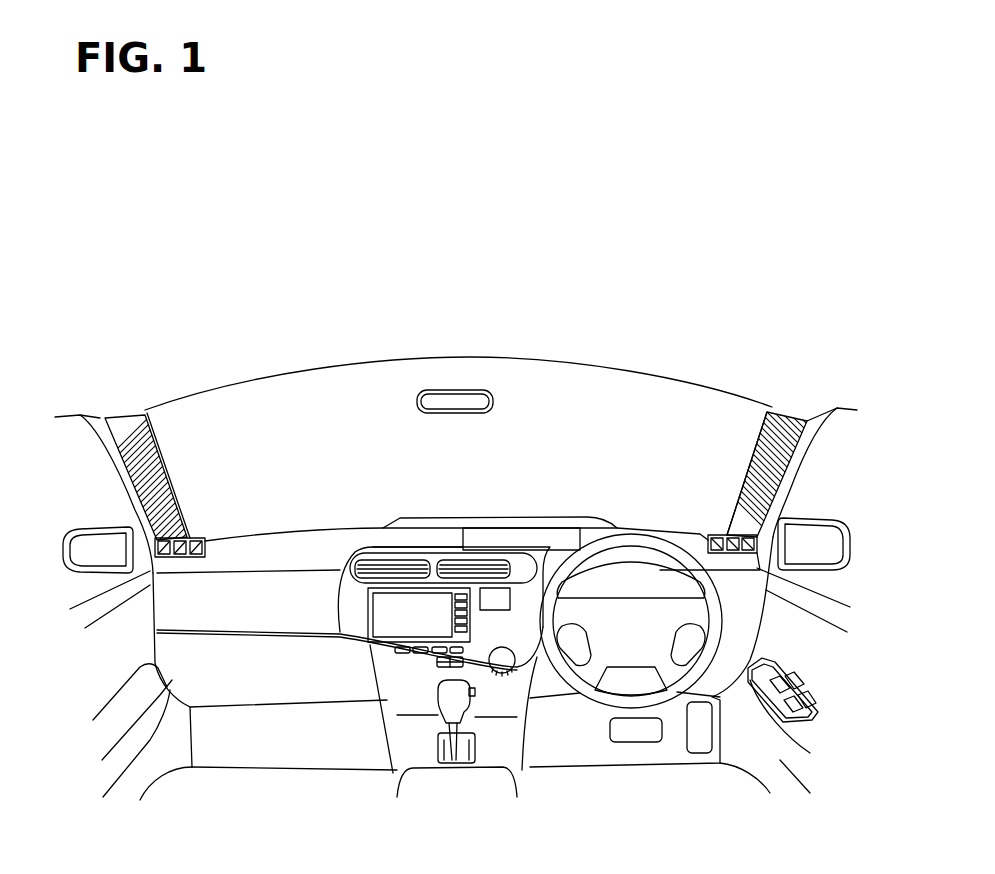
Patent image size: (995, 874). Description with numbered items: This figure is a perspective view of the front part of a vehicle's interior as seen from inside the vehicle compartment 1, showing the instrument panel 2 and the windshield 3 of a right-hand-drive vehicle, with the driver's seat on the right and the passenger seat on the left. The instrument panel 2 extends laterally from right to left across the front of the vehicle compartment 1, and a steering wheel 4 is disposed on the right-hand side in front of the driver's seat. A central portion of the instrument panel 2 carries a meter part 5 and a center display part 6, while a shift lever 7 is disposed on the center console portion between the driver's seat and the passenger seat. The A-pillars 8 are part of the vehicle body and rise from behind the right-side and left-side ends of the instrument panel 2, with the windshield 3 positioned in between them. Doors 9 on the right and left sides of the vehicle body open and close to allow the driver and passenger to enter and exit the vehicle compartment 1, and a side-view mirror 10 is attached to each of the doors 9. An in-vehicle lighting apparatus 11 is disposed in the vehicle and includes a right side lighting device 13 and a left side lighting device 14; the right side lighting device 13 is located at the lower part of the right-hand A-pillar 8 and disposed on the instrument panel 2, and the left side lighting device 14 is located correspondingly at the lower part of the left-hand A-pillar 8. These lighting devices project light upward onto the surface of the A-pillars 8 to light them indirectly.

The vehicle compartment 1 is at (375, 396).
The instrument panel 2 is at (330, 538).
The windshield 3 is at (533, 382).
The steering wheel 4 is at (710, 612).
The meter part 5 is at (507, 522).
The center display part 6 is at (383, 625).
The shift lever 7 is at (447, 712).
The A-pillar 8 is at (107, 458).
The door 9 is at (110, 658).
The side-view mirror 10 is at (117, 524).
The in-vehicle lighting apparatus 11 is at (127, 423).
The right side lighting device 13 is at (717, 533).
The left side lighting device 14 is at (197, 534).